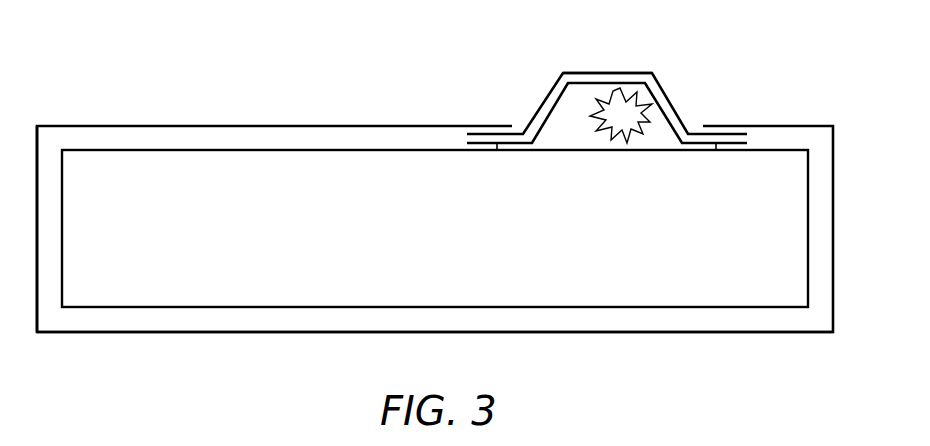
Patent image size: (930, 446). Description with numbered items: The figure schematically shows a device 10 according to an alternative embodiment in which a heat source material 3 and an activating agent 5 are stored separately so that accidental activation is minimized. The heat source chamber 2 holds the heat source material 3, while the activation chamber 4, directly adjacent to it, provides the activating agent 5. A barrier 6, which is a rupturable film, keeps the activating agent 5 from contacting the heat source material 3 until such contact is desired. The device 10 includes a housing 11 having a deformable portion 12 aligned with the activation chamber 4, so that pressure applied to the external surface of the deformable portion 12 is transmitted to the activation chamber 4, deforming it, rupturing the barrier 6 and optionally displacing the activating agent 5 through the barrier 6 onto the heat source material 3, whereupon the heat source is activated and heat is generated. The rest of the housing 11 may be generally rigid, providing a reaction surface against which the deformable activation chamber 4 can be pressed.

The device 10 is at (113, 103).
The housing 11 is at (60, 333).
The heat source chamber 2 is at (790, 310).
The heat source material 3 is at (435, 283).
The activation chamber 4 is at (665, 110).
The activating agent 5 is at (618, 113).
The barrier 6 is at (557, 147).
The deformable portion 12 is at (572, 72).